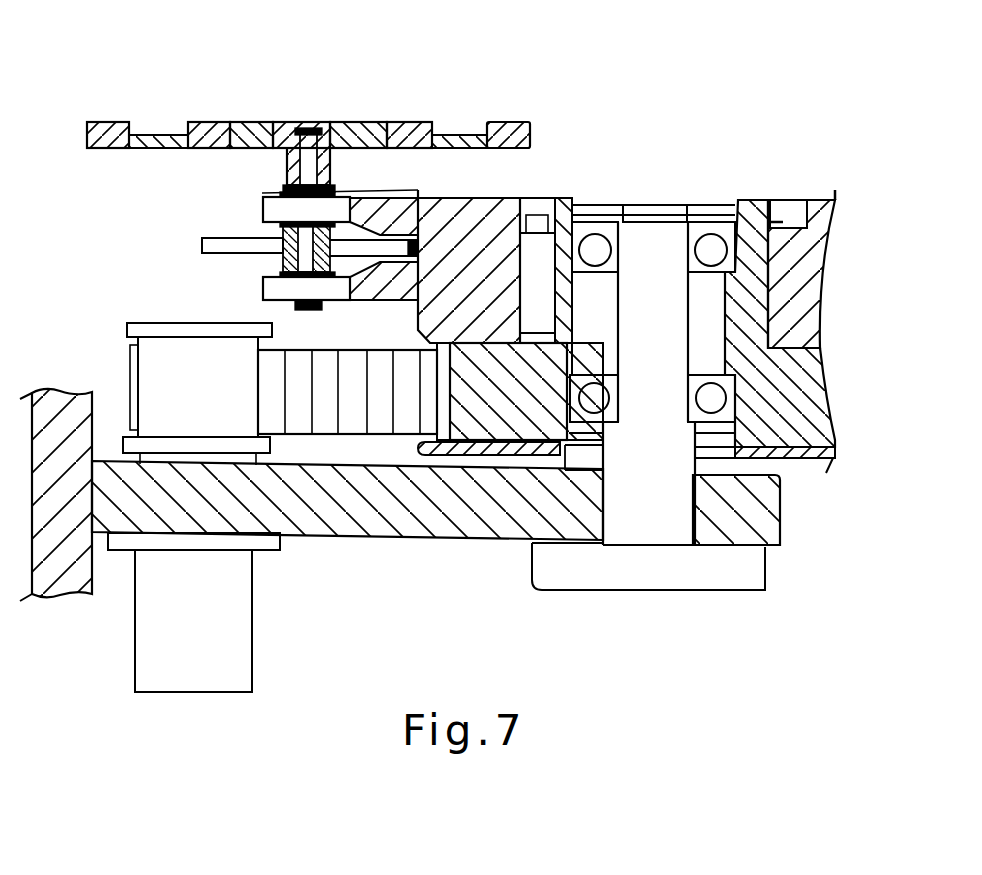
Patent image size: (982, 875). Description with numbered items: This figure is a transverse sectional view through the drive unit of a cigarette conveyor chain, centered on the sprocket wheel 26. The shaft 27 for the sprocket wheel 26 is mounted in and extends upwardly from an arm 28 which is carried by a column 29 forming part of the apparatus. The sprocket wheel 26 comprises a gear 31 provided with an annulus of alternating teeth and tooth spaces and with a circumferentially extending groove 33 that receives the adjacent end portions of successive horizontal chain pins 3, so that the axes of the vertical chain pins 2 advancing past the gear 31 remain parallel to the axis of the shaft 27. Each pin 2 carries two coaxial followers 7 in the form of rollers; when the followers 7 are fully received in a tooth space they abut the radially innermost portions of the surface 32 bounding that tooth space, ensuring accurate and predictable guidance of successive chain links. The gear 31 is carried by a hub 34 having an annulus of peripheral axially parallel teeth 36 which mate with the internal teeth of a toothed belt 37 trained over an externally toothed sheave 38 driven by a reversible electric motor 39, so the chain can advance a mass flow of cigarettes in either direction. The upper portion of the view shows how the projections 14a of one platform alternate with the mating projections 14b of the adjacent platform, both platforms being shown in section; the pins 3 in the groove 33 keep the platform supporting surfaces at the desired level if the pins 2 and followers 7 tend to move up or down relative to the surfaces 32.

The vertical chain pin 2 is at (325, 68).
The horizontal chain pin 3 is at (186, 240).
The follower 7 is at (280, 210).
The projection 14a is at (112, 133).
The mating projection 14b is at (155, 138).
The sprocket wheel 26 is at (813, 420).
The shaft 27 is at (647, 262).
The arm 28 is at (458, 510).
The column 29 is at (62, 582).
The gear 31 is at (818, 243).
The surface 32 is at (347, 213).
The circumferentially extending groove 33 is at (418, 190).
The hub 34 is at (490, 418).
The peripheral axially parallel teeth 36 is at (443, 410).
The toothed belt 37 is at (333, 420).
The externally toothed sheave 38 is at (153, 380).
The reversible electric motor 39 is at (193, 675).